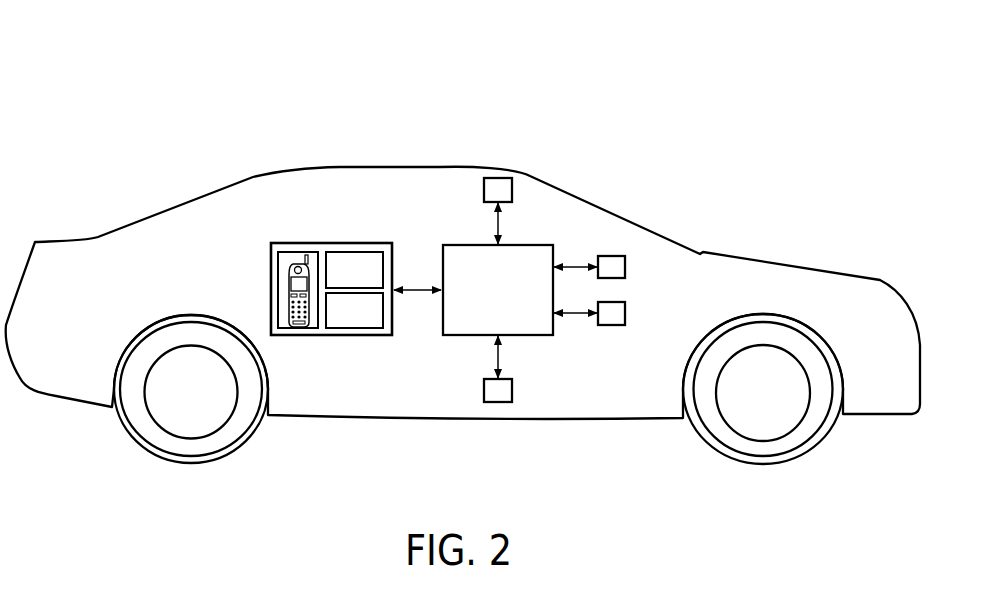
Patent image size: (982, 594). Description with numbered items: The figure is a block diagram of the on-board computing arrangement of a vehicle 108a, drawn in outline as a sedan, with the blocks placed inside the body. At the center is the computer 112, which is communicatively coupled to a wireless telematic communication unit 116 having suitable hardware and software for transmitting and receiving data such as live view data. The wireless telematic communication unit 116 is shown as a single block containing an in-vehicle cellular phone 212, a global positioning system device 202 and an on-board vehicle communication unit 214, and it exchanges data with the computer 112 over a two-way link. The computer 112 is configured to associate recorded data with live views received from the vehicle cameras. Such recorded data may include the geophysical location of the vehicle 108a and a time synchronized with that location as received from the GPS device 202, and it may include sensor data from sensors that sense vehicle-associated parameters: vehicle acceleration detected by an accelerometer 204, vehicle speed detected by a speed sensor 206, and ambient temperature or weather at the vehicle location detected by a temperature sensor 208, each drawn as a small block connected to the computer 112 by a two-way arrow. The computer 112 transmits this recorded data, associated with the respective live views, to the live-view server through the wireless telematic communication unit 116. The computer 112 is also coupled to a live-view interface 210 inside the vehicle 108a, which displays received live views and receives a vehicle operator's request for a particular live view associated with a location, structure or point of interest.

The vehicle 108a is at (463, 247).
The computer 112 is at (463, 245).
The wireless telematic communication unit 116 is at (301, 287).
The global positioning system (GPS) device 202 is at (353, 252).
The accelerometer 204 is at (625, 267).
The speed sensor 206 is at (625, 313).
The temperature sensor 208 is at (512, 388).
The live-view interface 210 is at (512, 190).
The in-vehicle cellular phone 212 is at (277, 285).
The on-board vehicle communication unit (VCU) 214 is at (357, 328).